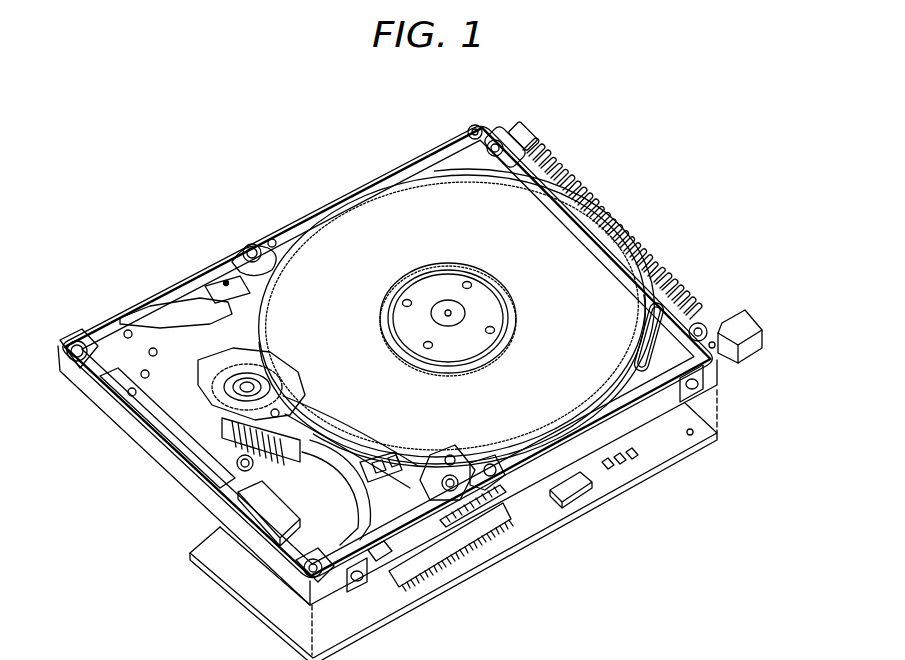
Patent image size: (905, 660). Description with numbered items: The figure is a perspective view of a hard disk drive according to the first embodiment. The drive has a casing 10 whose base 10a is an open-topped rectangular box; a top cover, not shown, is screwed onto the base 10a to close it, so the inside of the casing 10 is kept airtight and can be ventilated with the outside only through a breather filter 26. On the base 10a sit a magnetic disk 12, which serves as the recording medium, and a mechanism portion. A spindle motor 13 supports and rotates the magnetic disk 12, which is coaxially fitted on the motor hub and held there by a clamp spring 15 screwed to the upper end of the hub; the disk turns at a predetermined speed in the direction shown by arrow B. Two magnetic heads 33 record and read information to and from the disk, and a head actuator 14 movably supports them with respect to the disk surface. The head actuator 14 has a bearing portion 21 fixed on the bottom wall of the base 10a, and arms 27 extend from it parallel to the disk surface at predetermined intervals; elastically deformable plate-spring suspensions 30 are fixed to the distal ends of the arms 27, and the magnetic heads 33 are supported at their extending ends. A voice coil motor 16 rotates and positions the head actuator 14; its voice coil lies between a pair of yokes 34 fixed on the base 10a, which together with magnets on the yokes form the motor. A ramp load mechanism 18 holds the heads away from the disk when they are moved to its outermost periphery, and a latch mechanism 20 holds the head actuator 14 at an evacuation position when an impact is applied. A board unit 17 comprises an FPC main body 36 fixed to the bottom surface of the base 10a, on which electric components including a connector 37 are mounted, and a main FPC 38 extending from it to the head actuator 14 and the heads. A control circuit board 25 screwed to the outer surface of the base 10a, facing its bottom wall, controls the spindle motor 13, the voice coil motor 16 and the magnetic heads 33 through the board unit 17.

The casing 10 is at (387, 369).
The base 10a is at (378, 561).
The magnetic disk 12 is at (375, 208).
The spindle motor 13 is at (522, 317).
The head actuator 14 is at (351, 410).
The clamp spring 15 is at (474, 272).
The voice coil motor 16 is at (160, 316).
The board unit 17 is at (230, 484).
The ramp load mechanism 18 is at (454, 495).
The latch mechanism 20 is at (214, 290).
The bearing portion 21 is at (272, 371).
The control circuit board 25 is at (547, 519).
The breather filter 26 is at (650, 358).
The arms 27 is at (347, 440).
The suspensions 30 is at (382, 462).
The magnetic heads 33 is at (432, 545).
The yokes 34 is at (150, 400).
The FPC main body 36 is at (300, 548).
The connector 37 is at (243, 537).
The main FPC 38 is at (311, 466).
The arrow B is at (347, 355).